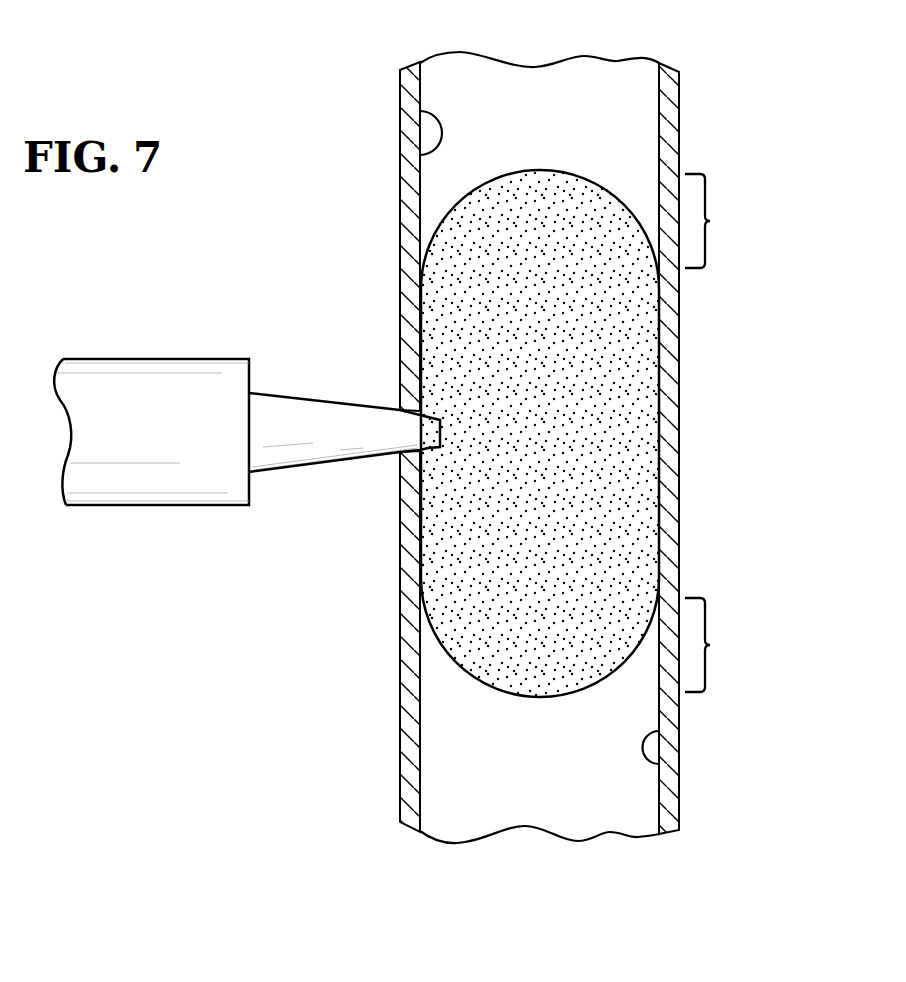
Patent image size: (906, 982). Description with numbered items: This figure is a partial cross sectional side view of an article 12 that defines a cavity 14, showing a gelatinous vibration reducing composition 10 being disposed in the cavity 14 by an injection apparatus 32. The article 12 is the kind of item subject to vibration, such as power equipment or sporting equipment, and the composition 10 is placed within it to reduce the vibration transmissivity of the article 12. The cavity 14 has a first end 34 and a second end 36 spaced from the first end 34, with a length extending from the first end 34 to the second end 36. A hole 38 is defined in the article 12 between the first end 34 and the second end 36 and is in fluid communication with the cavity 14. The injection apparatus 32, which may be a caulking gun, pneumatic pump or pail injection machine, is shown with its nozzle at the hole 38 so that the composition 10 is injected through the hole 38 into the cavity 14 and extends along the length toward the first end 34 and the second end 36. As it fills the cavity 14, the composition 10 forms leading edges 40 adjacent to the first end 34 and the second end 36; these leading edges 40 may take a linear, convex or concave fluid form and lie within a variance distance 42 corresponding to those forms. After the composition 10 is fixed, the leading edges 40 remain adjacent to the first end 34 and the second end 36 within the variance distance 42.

The gelatinous vibration reducing composition 10 is at (627, 440).
The article 12 is at (712, 104).
The cavity 14 is at (422, 113).
The injection apparatus 32 is at (325, 445).
The first end 34 is at (555, 788).
The second end 36 is at (607, 95).
The hole 38 is at (407, 414).
The leading edges 40 is at (543, 170).
The variance distance 42 is at (710, 221).